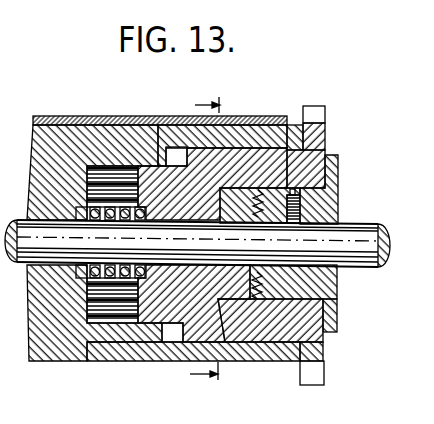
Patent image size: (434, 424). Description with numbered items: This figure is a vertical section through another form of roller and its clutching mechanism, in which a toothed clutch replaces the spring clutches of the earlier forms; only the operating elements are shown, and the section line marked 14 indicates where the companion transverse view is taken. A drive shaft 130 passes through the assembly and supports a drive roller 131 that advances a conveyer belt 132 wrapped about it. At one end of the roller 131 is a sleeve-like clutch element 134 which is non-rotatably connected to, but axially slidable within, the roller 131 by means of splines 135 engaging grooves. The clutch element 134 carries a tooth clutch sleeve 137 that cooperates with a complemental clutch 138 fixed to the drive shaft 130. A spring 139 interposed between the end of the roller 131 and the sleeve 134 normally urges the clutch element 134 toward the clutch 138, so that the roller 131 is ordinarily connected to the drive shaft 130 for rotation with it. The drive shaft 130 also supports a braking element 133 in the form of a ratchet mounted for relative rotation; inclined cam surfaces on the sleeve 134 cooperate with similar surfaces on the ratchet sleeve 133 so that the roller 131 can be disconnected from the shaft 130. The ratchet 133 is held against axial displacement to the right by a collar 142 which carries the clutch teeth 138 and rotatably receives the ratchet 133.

The drive shaft 130 is at (358, 264).
The drive roller 131 is at (95, 133).
The conveyer belt 132 is at (47, 117).
The braking element 133 is at (320, 137).
The clutch element 134 is at (227, 207).
The splines 135 is at (158, 117).
The tooth clutch sleeve 137 is at (248, 267).
The complemental clutch 138 is at (289, 127).
The spring 139 is at (112, 277).
The collar 142 is at (331, 203).
The section line 14- 14 is at (205, 244).